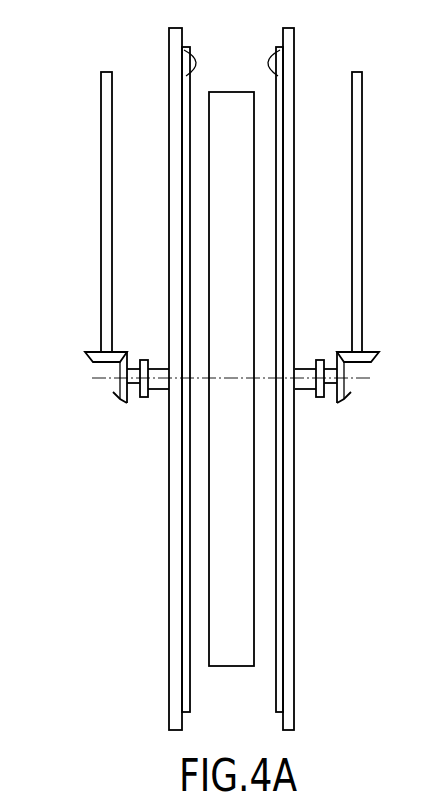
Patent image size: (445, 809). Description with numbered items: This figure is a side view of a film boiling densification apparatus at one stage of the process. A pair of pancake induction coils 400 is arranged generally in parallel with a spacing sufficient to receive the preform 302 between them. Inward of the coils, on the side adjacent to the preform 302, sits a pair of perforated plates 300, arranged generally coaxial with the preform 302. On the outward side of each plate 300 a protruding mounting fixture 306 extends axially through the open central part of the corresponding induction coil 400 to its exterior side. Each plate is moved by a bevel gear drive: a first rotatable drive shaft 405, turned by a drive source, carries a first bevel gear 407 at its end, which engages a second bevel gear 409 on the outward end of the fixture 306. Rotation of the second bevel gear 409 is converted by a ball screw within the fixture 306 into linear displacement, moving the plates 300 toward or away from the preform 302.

The perforated plate 300 is at (190, 67).
The preform 302 is at (232, 101).
The mounting fixture 306 is at (158, 390).
The pancake induction coil 400 is at (173, 41).
The first rotatable drive shaft 405 is at (101, 188).
The first bevel gear 407 is at (88, 362).
The second bevel gear 409 is at (118, 397).